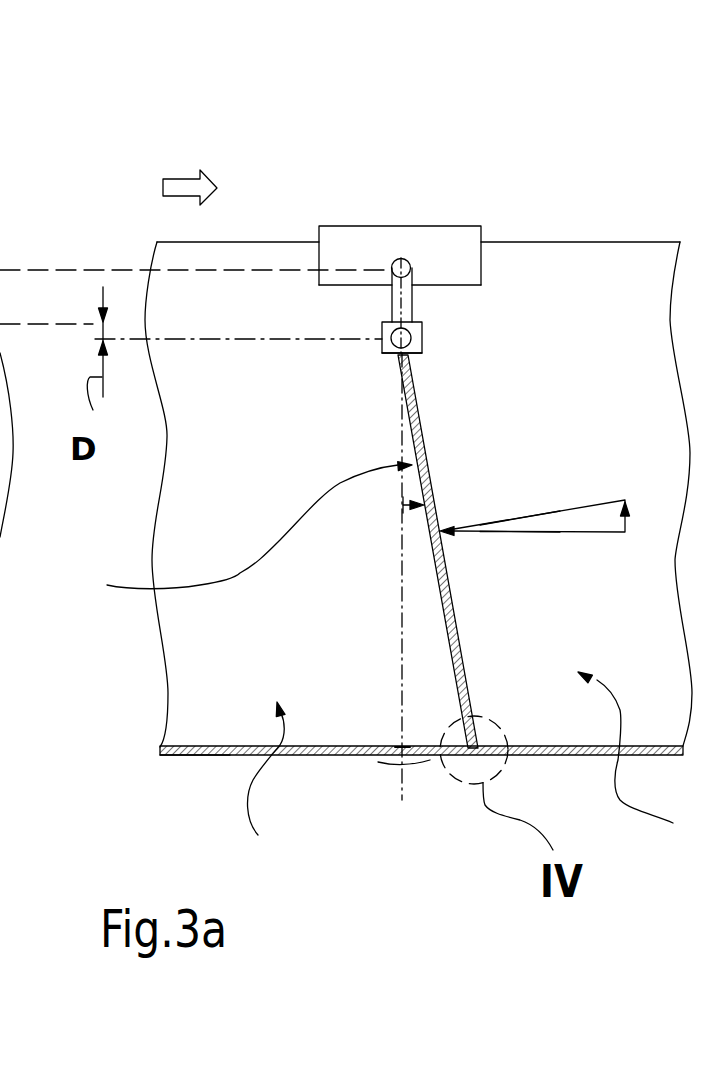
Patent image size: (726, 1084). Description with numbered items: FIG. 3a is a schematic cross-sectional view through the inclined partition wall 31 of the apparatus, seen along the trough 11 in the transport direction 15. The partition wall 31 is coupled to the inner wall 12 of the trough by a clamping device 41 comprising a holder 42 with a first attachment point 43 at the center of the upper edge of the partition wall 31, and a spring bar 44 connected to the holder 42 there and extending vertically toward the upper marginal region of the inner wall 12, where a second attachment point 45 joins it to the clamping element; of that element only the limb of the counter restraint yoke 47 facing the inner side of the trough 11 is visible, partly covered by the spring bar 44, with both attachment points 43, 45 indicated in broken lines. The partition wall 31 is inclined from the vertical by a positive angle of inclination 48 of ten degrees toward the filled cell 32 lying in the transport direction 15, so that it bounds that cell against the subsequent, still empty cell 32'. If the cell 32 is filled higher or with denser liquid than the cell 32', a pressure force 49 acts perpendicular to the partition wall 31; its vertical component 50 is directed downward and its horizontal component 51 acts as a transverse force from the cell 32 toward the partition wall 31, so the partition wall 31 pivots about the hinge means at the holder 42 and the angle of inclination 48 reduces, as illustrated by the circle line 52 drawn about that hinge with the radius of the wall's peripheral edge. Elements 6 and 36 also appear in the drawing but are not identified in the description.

The component 6 is at (1, 138).
The trough 11 is at (230, 755).
The inner wall of the trough 12 is at (632, 290).
The transport direction 15 is at (185, 178).
The partition wall 31 is at (418, 417).
The cell 32 is at (435, 772).
The subsequent cell 32' is at (263, 789).
The opening 36 is at (403, 747).
The clamping device 41 is at (370, 215).
The holder 42 is at (382, 350).
The first attachment point 43 is at (411, 338).
The spring bar 44 is at (410, 302).
The second attachment point 45 is at (410, 267).
The counter restraint yoke 47 is at (337, 243).
The angle of inclination 48 is at (238, 534).
The pressure force 49 is at (533, 513).
The vertical component 50 is at (627, 502).
The horizontal component 51 is at (533, 533).
The circle line 52 is at (378, 762).